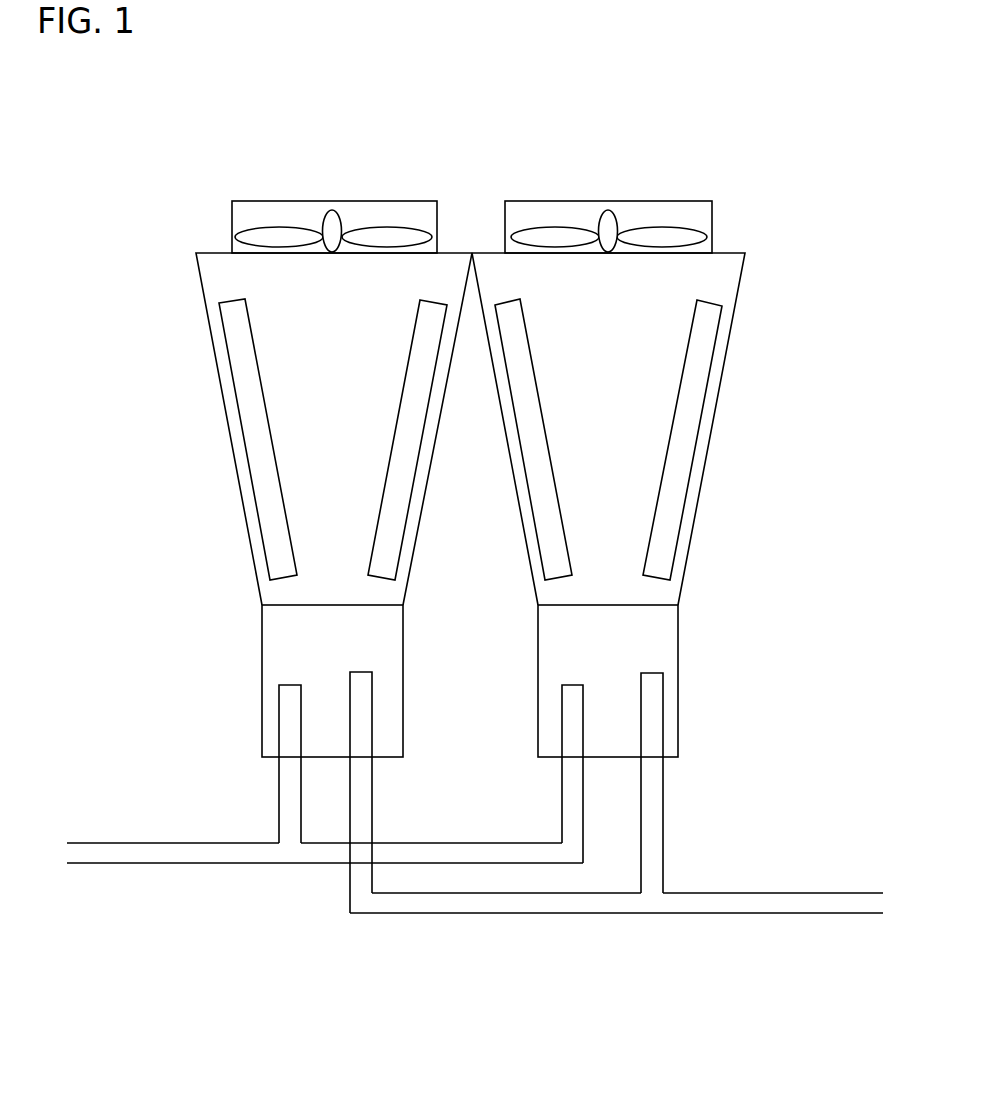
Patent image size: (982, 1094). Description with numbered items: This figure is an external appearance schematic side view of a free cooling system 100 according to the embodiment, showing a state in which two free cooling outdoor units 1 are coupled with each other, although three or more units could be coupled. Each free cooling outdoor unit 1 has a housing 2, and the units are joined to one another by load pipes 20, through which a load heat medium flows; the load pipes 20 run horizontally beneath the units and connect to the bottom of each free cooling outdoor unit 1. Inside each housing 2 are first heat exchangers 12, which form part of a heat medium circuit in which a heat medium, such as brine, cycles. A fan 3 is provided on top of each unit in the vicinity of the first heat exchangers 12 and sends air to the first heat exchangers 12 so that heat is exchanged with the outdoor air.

The free cooling system 100 is at (488, 142).
The free cooling outdoor unit 1 is at (325, 760).
The housing 2 is at (232, 457).
The fan 3 is at (258, 228).
The first heat exchanger 12 is at (417, 317).
The load pipe 20 is at (142, 867).